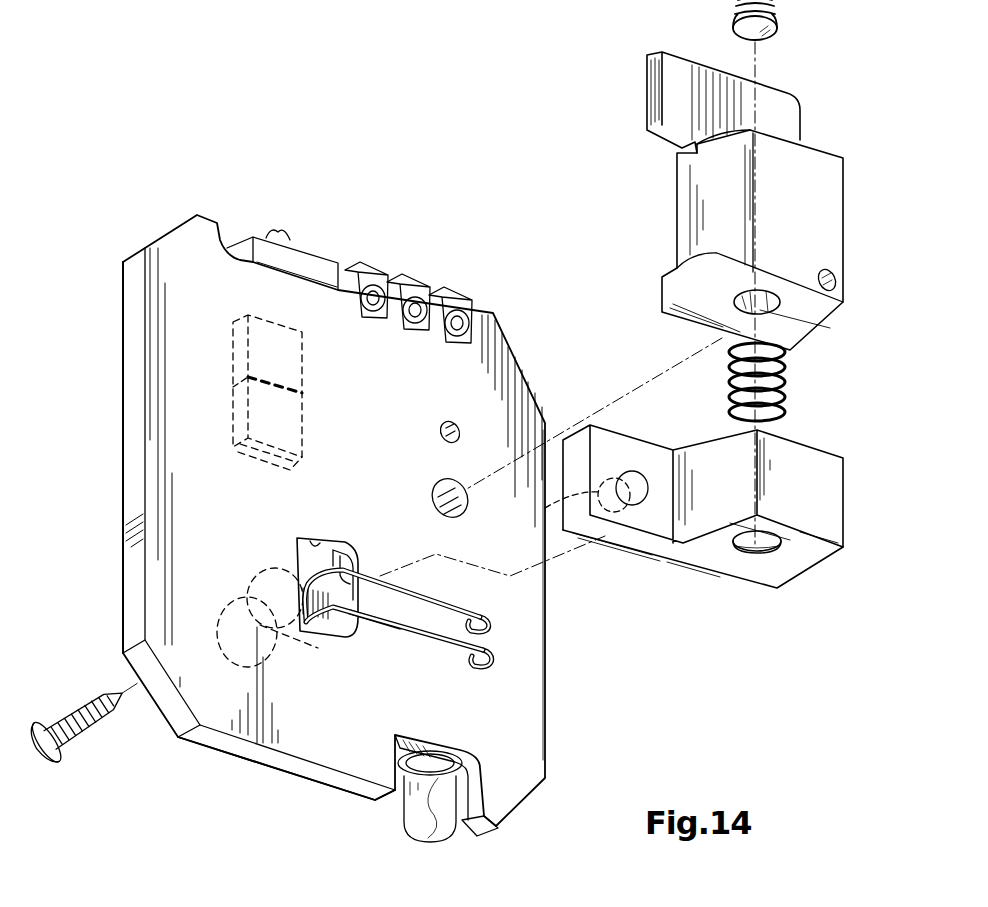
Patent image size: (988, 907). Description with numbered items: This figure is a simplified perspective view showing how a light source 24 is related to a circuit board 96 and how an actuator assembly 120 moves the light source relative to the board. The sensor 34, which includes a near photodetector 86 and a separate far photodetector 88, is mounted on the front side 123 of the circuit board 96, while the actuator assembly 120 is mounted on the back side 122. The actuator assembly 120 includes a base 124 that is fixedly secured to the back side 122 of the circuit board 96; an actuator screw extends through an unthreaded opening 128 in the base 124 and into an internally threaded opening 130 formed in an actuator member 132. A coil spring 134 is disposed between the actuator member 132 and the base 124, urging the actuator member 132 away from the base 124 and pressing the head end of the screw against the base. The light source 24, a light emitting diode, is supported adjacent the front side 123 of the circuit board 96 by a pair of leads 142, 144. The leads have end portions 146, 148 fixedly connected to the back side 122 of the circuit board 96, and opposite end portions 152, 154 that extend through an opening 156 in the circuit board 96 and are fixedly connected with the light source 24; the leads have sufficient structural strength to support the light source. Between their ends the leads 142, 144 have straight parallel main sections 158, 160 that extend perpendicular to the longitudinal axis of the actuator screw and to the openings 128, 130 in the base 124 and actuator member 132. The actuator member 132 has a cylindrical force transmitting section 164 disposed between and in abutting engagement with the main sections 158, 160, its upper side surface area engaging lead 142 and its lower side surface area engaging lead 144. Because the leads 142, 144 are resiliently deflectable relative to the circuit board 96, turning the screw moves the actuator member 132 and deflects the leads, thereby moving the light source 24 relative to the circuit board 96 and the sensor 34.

The light source 24 is at (280, 662).
The sensor 34 is at (243, 447).
The near photodetector 86 is at (303, 385).
The far photodetector 88 is at (303, 413).
The circuit board 96 is at (286, 740).
The actuator assembly 120 is at (655, 212).
The back side 122 is at (158, 482).
The front side 123 is at (123, 563).
The base 124 is at (828, 155).
The unthreaded opening 128 is at (783, 297).
The internally threaded opening 130 is at (757, 556).
The actuator member 132 is at (845, 532).
The coil spring 134 is at (788, 386).
The lead 142 is at (482, 598).
The lead 144 is at (439, 655).
The end portion 146 is at (490, 618).
The end portion 148 is at (492, 652).
The end portion 152 is at (275, 561).
The end portion 154 is at (297, 598).
The opening 156 is at (316, 540).
The main section 158 is at (376, 566).
The main section 160 is at (407, 628).
The cylindrical force transmitting section 164 is at (545, 507).